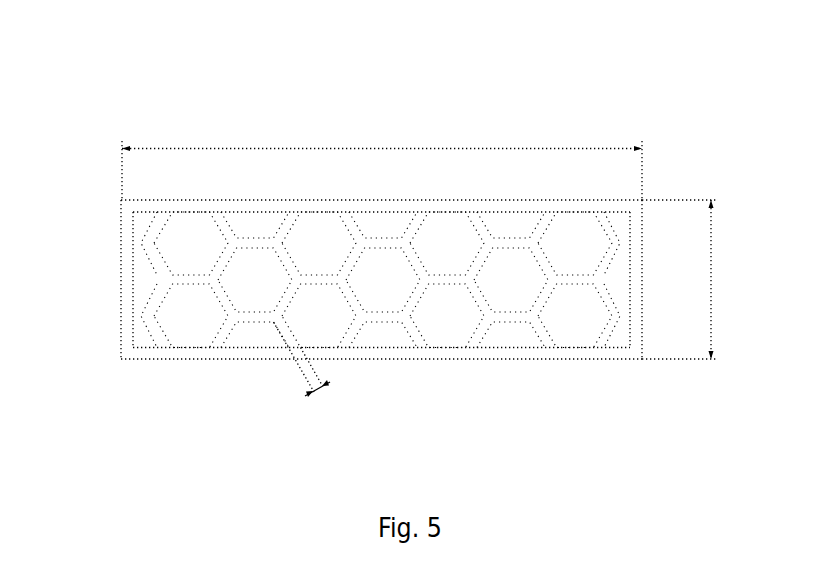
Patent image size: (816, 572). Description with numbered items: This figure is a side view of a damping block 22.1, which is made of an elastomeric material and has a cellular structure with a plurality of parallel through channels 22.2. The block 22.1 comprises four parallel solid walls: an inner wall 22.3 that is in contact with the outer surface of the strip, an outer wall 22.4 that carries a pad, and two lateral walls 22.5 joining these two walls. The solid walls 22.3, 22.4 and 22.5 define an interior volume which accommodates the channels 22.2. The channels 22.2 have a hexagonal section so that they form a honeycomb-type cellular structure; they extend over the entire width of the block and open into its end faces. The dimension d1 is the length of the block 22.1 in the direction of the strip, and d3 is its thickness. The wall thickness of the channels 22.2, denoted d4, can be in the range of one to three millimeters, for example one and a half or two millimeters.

The damping block 22.1 is at (393, 247).
The through channels 22.2 is at (183, 257).
The inner wall 22.3 is at (497, 360).
The outer wall 22.4 is at (267, 205).
The lateral walls 22.5 is at (122, 282).
The dimension of the block in the direction of the strip d1 is at (382, 156).
The thickness of the block d3 is at (699, 279).
The wall thickness of the channels d4 is at (311, 374).